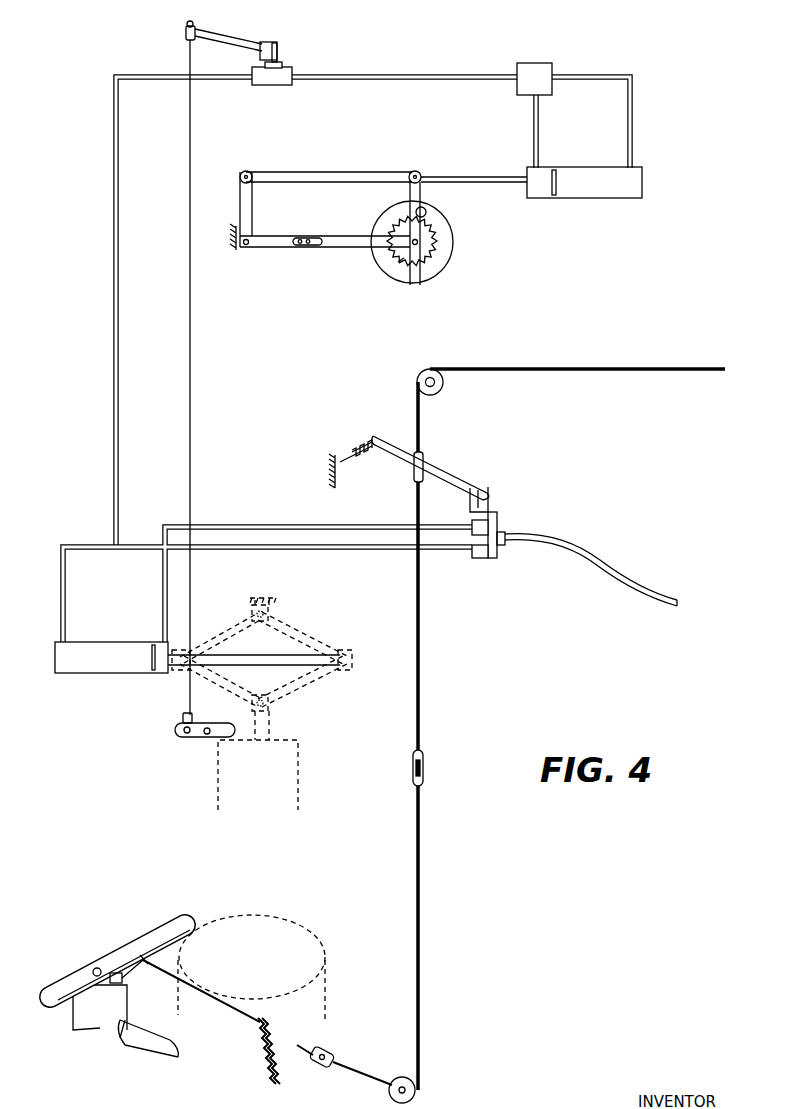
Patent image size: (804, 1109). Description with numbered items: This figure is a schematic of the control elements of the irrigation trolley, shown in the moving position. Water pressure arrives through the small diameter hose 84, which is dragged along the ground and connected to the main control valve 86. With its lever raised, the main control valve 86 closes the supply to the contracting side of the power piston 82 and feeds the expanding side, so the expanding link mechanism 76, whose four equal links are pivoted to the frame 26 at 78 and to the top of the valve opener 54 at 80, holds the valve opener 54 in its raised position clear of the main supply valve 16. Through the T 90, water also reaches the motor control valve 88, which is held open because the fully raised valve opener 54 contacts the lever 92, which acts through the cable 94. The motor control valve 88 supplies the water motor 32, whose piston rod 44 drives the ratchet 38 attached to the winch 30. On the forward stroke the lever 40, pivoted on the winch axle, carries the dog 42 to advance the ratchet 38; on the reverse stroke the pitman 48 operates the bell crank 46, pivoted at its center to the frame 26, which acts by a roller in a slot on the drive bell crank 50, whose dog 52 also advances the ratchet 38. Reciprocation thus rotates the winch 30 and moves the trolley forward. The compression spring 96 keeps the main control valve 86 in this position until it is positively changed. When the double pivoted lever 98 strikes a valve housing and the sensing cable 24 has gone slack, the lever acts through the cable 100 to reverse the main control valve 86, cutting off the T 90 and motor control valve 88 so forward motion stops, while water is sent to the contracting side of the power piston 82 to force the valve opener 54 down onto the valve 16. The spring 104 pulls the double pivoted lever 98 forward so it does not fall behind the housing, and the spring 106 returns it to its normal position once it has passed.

The main supply valve 16 is at (327, 993).
The sensing cable 24 is at (545, 369).
The frame 26 is at (236, 250).
The cathead or gypsy winch 30 is at (440, 270).
The water motor 32 is at (568, 198).
The ratchet 38 is at (438, 240).
The lever 40 is at (422, 193).
The dog 42 is at (426, 212).
The piston rod 44 is at (450, 177).
The bell crank 46 is at (252, 246).
The pitman 48 is at (310, 172).
The drive bell crank 50 is at (325, 236).
The dog 52 is at (400, 264).
The valve opener 54 is at (300, 770).
The expanding link mechanism 76 is at (350, 620).
The frame pivot 78 is at (270, 614).
The valve opener pivot 80 is at (270, 710).
The power piston 82 is at (118, 676).
The small diameter hose 84 is at (585, 566).
The main control valve 86 is at (490, 558).
The motor control valve 88 is at (270, 84).
The T 90 is at (113, 546).
The lever 92 is at (203, 740).
The cable 94 is at (192, 368).
The compression spring 96 is at (360, 450).
The double pivoted lever 98 is at (120, 955).
The cable 100 is at (420, 860).
The spring 104 is at (272, 1045).
The spring 106 is at (126, 982).